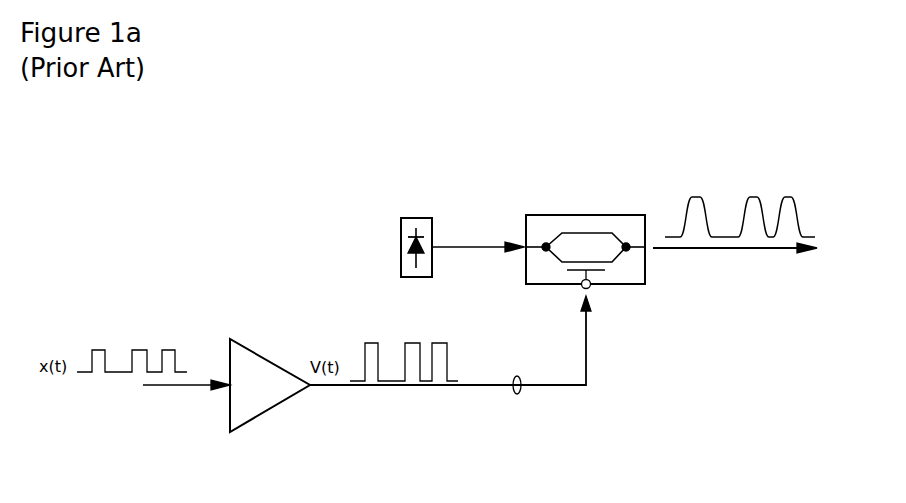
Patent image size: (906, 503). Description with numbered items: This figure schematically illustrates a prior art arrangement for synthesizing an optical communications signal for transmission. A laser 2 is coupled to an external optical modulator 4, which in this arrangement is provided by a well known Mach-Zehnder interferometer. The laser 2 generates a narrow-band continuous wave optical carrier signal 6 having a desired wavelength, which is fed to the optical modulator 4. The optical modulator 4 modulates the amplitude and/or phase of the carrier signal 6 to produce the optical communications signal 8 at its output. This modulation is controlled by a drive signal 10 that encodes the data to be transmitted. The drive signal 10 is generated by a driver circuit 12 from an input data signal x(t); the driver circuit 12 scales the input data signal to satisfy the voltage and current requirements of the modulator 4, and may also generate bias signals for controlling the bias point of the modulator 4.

The laser 2 is at (416, 218).
The optical modulator 4 is at (577, 215).
The carrier signal 6 is at (460, 247).
The optical communications signal 8 is at (752, 248).
The drive signal 10 is at (517, 394).
The driver circuit 12 is at (265, 358).